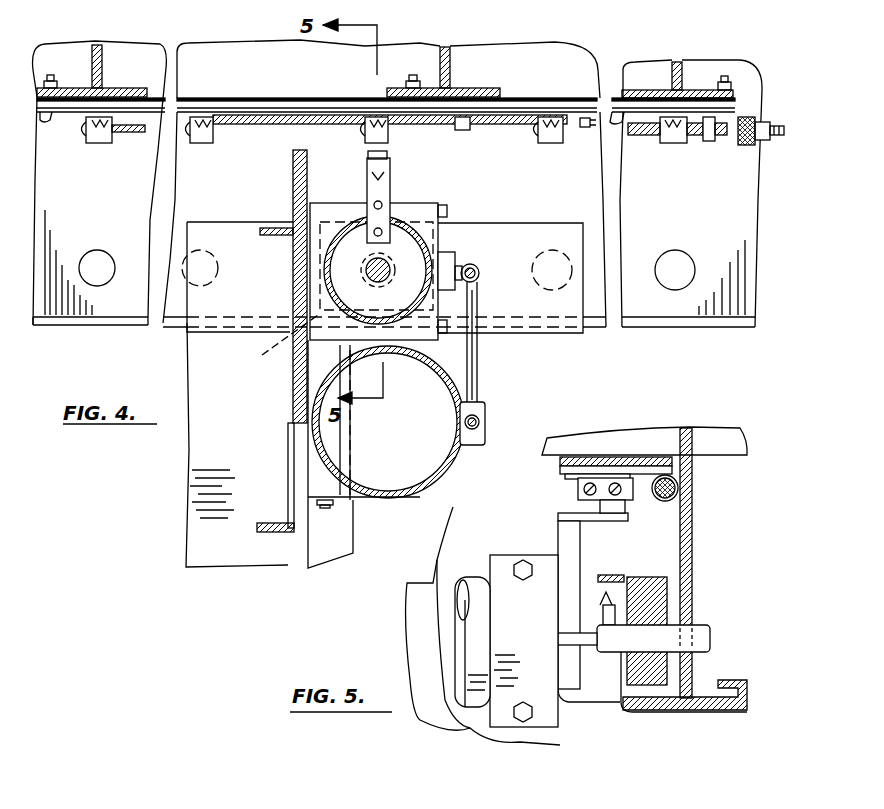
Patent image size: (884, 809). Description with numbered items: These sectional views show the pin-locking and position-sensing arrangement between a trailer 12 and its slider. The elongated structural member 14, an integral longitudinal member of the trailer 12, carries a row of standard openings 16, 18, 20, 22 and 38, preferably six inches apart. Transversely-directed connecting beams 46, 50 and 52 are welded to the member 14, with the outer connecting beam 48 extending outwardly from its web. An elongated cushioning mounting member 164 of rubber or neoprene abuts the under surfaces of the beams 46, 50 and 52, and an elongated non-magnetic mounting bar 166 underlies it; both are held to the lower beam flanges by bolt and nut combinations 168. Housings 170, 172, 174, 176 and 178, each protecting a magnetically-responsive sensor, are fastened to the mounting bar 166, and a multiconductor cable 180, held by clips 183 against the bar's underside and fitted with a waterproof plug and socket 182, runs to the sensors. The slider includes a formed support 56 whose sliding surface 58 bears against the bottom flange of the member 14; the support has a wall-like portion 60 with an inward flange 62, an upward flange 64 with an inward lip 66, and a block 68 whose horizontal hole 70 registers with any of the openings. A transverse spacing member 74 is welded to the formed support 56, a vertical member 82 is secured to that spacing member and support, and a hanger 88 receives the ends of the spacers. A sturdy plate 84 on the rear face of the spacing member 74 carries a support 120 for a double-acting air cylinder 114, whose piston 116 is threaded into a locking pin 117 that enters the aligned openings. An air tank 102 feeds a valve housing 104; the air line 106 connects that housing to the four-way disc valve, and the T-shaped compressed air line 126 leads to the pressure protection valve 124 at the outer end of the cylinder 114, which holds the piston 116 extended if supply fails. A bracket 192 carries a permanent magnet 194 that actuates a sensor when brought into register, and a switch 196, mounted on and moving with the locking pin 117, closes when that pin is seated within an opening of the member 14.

In FIG. 5, the trailer 12 is at (730, 430).
In FIG. 4, the elongated structural member 14 is at (50, 328).
In FIG. 5, the elongated structural member 14 is at (692, 540).
In FIG. 4, the opening 16 is at (680, 262).
In FIG. 4, the opening 18 is at (552, 250).
In FIG. 4, the opening 20 is at (280, 340).
In FIG. 5, the opening 20 is at (705, 630).
In FIG. 4, the opening 22 is at (190, 287).
In FIG. 4, the opening 38 is at (97, 254).
In FIG. 4, the transversely-directed connecting beam 46 is at (450, 70).
In FIG. 5, the transversely-directed connecting beam 46 is at (662, 440).
In FIG. 5, the transversely-directed connecting beam 48 is at (745, 440).
In FIG. 4, the transversely-directed connecting beam 50 is at (98, 66).
In FIG. 4, the transversely-directed connecting beam 52 is at (680, 66).
In FIG. 5, the formed support 56 is at (742, 714).
In FIG. 5, the sliding surface 58 is at (705, 712).
In FIG. 5, the wall-like portion 60 is at (622, 695).
In FIG. 5, the flange 62 is at (610, 575).
In FIG. 5, the flange 64 is at (752, 700).
In FIG. 5, the lip 66 is at (740, 684).
In FIG. 5, the block 68 is at (645, 578).
In FIG. 5, the hole 70 is at (648, 640).
In FIG. 4, the spacing member 74 is at (270, 540).
In FIG. 5, the spacing member 74 is at (410, 600).
In FIG. 4, the vertical member 82 is at (315, 556).
In FIG. 4, the plate 84 is at (293, 158).
In FIG. 5, the plate 84 is at (437, 560).
In FIG. 4, the hanger 88 is at (186, 560).
In FIG. 4, the air tank 102 is at (318, 440).
In FIG. 4, the valve housing 104 is at (486, 415).
In FIG. 4, the air line 106 is at (480, 426).
In FIG. 4, the double-acting air cylinder 114 is at (420, 228).
In FIG. 5, the double-acting air cylinder 114 is at (470, 690).
In FIG. 4, the piston 116 is at (366, 262).
In FIG. 5, the piston 116 is at (497, 633).
In FIG. 4, the locking pin 117 is at (364, 278).
In FIG. 5, the locking pin 117 is at (710, 640).
In FIG. 4, the support 120 is at (398, 203).
In FIG. 5, the support 120 is at (500, 740).
In FIG. 4, the valve 124 is at (450, 262).
In FIG. 4, the compressed air line 126 is at (478, 354).
In FIG. 4, the cushioning mounting member 164 is at (250, 103).
In FIG. 5, the cushioning mounting member 164 is at (598, 458).
In FIG. 4, the mounting bar 166 is at (565, 110).
In FIG. 5, the mounting bar 166 is at (580, 460).
In FIG. 4, the bolt and nut combination 168 is at (50, 76).
In FIG. 4, the housing 170 is at (100, 143).
In FIG. 4, the housing 172 is at (200, 143).
In FIG. 4, the housing 174 is at (388, 132).
In FIG. 5, the housing 174 is at (578, 488).
In FIG. 4, the housing 176 is at (550, 143).
In FIG. 4, the housing 178 is at (672, 143).
In FIG. 4, the multiconductor cable 180 is at (322, 116).
In FIG. 5, the multiconductor cable 180 is at (678, 489).
In FIG. 4, the plug and socket 182 is at (745, 146).
In FIG. 4, the clip 183 is at (310, 124).
In FIG. 5, the clip 183 is at (684, 495).
In FIG. 4, the bracket 192 is at (367, 180).
In FIG. 5, the bracket 192 is at (565, 513).
In FIG. 4, the permanent magnet 194 is at (368, 155).
In FIG. 5, the permanent magnet 194 is at (625, 516).
In FIG. 5, the switch 196 is at (615, 614).